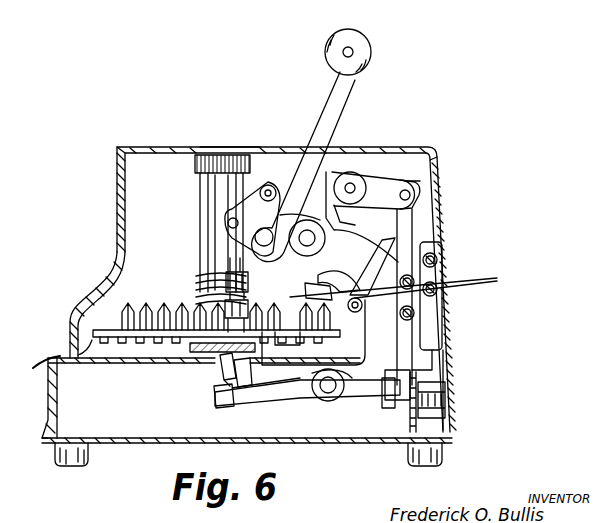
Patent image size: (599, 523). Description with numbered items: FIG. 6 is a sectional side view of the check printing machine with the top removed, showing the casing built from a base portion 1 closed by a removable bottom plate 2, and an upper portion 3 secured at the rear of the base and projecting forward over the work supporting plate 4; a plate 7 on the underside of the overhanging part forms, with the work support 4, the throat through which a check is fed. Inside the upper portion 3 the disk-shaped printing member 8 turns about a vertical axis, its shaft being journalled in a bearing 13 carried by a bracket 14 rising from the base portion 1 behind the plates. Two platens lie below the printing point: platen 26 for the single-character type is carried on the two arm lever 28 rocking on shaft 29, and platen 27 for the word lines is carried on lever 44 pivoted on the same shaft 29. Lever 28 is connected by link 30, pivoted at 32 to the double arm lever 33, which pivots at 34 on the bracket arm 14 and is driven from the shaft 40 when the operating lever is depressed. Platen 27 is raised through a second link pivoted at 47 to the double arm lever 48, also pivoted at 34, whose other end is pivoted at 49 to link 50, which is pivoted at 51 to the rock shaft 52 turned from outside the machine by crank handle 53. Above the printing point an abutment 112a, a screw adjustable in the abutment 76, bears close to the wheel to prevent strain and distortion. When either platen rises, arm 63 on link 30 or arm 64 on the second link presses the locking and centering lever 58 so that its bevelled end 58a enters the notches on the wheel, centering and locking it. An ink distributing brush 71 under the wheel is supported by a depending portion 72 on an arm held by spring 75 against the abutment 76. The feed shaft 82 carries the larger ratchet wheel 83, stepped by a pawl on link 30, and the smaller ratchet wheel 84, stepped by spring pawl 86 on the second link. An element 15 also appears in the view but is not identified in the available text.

The base portion 1 is at (450, 378).
The removable bottom plate 2 is at (113, 448).
The upper portion 3 is at (452, 303).
The work supporting plate 4 is at (107, 362).
The plate 7 is at (72, 344).
The printing member 8 is at (105, 328).
The bearing 13 is at (199, 186).
The bracket 14 is at (355, 222).
The cover top 15 is at (252, 157).
The platen 26 is at (220, 366).
The platen 27 is at (250, 373).
The two arm lever 28 is at (294, 402).
The shaft 29 is at (329, 394).
The link 30 is at (420, 225).
The pivot 32 is at (412, 196).
The double arm lever 33 is at (328, 178).
The pivot shaft 34 is at (350, 170).
The shaft 40 is at (316, 240).
The lever 44 is at (232, 392).
The pivot 47 is at (416, 178).
The double arm lever 48 is at (395, 173).
The pivot 49 is at (272, 190).
The link 50 is at (265, 180).
The pivot 51 is at (228, 224).
The rock shaft 52 is at (270, 246).
The crank handle 53 is at (371, 41).
The locking and centering lever 58 is at (330, 276).
The bevelled end 58a is at (328, 291).
The arm 63 is at (440, 270).
The arm 64 is at (385, 262).
The brush 71 is at (200, 348).
The depending portion 72 is at (292, 350).
The spring 75 is at (200, 275).
The abutment 76 is at (197, 298).
The shaft 82 is at (384, 402).
The ratchet wheel 83 is at (414, 425).
The ratchet wheel 84 is at (448, 423).
The spring pawl 86 is at (432, 342).
The abutment 112a is at (414, 283).